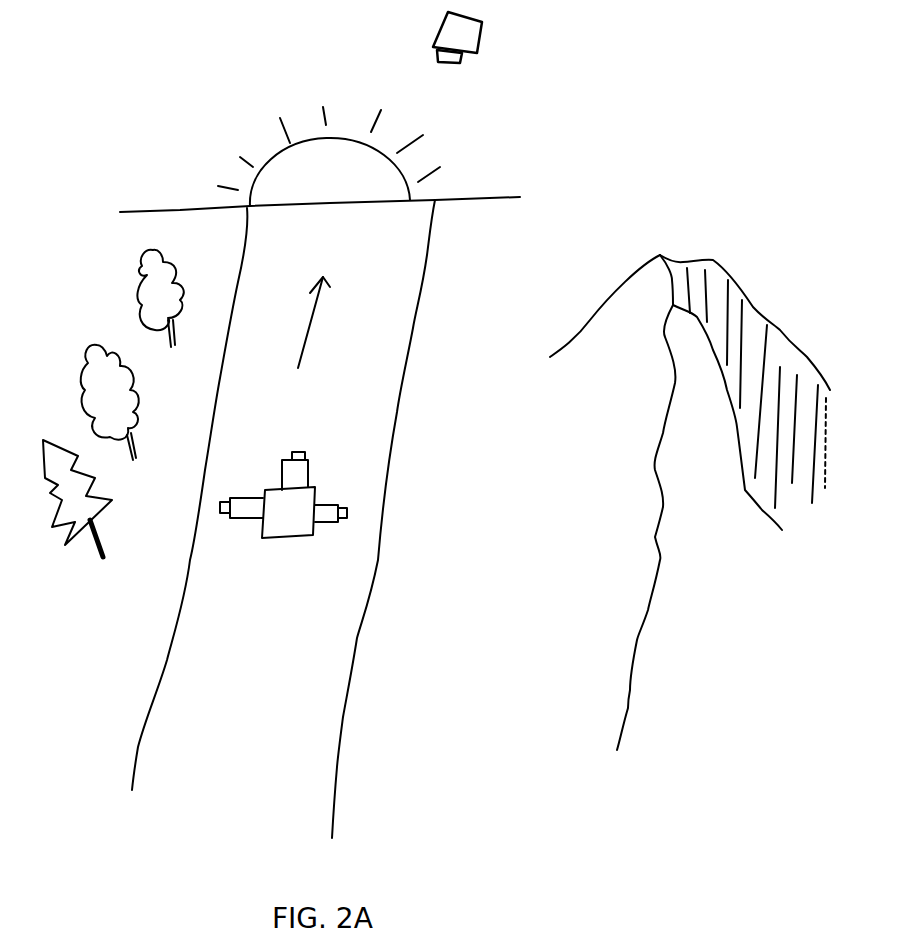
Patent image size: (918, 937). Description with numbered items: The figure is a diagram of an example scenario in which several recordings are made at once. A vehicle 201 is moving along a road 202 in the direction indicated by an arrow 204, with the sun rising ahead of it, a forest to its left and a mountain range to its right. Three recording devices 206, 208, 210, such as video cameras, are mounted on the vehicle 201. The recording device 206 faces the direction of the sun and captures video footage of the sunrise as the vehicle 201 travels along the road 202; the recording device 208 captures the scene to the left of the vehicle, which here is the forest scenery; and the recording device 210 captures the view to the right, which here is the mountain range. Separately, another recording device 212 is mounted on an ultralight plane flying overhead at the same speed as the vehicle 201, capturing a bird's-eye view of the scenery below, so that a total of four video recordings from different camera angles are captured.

The vehicle 201 is at (293, 540).
The road 202 is at (330, 735).
The arrow 204 is at (333, 322).
The recording device 206 is at (310, 465).
The recording device 208 is at (233, 497).
The recording device 210 is at (325, 528).
The recording device 212 is at (482, 40).